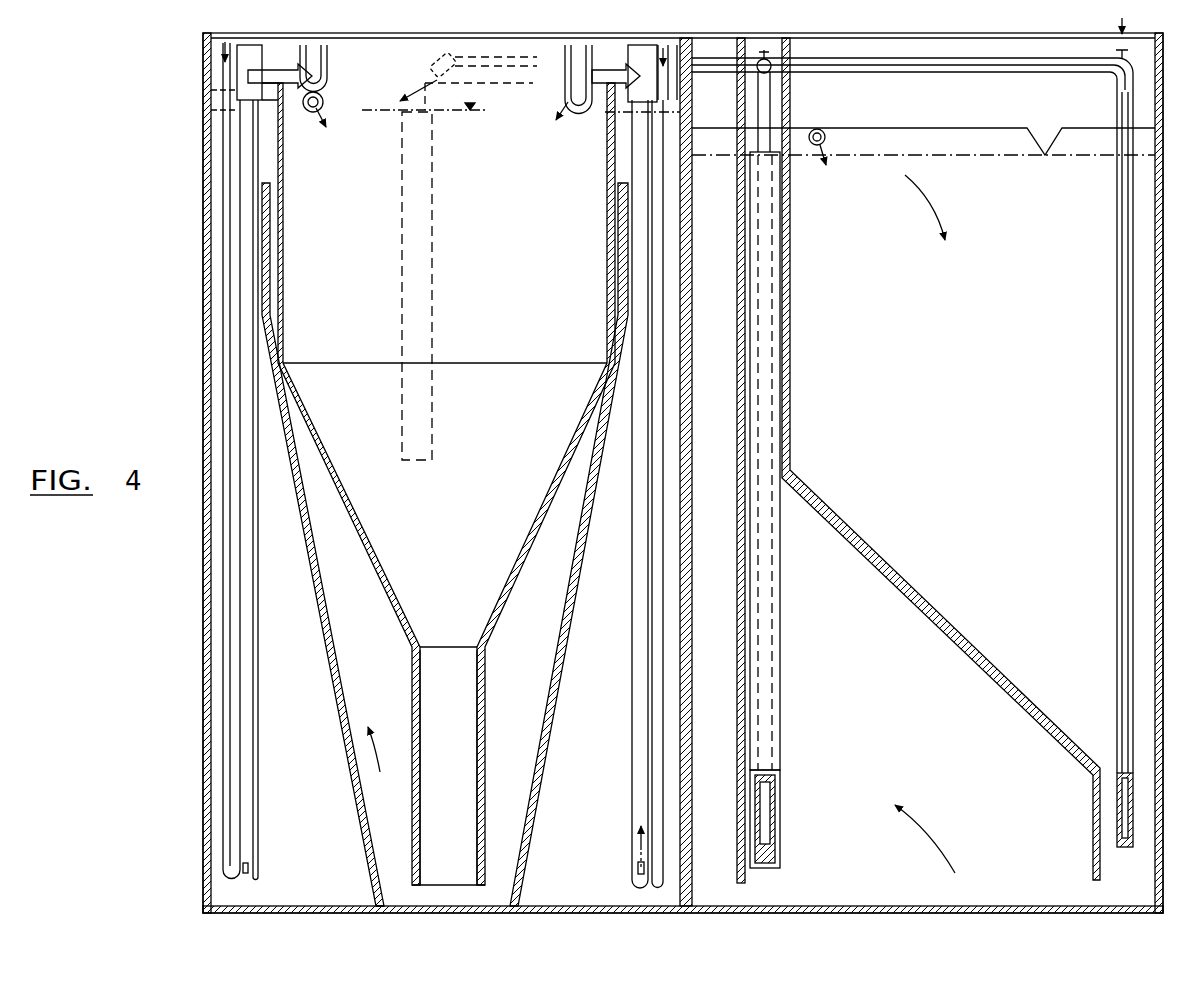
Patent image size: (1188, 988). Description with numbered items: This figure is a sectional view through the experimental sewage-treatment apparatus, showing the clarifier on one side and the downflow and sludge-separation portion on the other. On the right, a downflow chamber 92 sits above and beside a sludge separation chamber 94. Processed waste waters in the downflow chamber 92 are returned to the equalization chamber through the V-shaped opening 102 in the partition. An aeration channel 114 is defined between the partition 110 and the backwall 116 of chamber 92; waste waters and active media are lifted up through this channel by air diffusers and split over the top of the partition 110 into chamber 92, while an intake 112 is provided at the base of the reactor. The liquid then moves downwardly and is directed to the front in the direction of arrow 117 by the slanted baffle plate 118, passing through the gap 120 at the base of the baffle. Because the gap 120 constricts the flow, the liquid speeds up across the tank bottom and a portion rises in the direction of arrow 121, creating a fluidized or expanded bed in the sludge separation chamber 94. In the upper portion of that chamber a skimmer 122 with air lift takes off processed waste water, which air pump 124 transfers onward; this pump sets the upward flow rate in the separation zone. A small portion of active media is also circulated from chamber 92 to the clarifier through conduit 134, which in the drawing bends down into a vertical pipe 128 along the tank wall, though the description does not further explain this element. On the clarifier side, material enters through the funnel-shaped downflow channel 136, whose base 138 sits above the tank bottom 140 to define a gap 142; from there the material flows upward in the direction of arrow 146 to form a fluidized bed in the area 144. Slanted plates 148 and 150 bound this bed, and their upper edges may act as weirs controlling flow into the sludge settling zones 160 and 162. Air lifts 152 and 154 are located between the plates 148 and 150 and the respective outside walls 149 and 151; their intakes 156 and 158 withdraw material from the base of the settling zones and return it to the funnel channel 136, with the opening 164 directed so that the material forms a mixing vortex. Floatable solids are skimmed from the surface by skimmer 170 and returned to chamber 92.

The downflow chamber 92 is at (970, 341).
The sludge separation chamber 94 is at (890, 711).
The V-shaped opening 102 is at (1045, 157).
The partition 110 is at (737, 648).
The intake 112 is at (742, 890).
The aeration channel 114 is at (737, 440).
The backwall 116 is at (692, 648).
The arrow 117 is at (901, 184).
The slanted baffle plate 118 is at (890, 585).
The gap 120 is at (1092, 890).
The arrow 121 is at (937, 839).
The skimmer with air lift 122 is at (780, 203).
The air pump 124 is at (758, 100).
The downpipe 128 is at (1105, 76).
The conduit 134 is at (985, 72).
The funnel-shaped downflow channel 136 is at (305, 170).
The base of funnel-shaped channel 138 is at (420, 815).
The bottom of clarifier tank 140 is at (380, 904).
The gap 142 is at (482, 882).
The area 144 is at (446, 484).
The arrow 146 is at (385, 740).
The slanted plate 148 is at (308, 540).
The outside wall 149 is at (203, 655).
The slanted plate 150 is at (574, 592).
The outside wall 151 is at (692, 738).
The air lift 152 is at (255, 725).
The air lift 154 is at (640, 738).
The intake 156 is at (250, 885).
The intake 158 is at (628, 882).
The sludge settling zone 160 is at (295, 621).
The sludge settling zone 162 is at (605, 621).
The opening 164 is at (326, 105).
The skimmer 170 is at (430, 118).